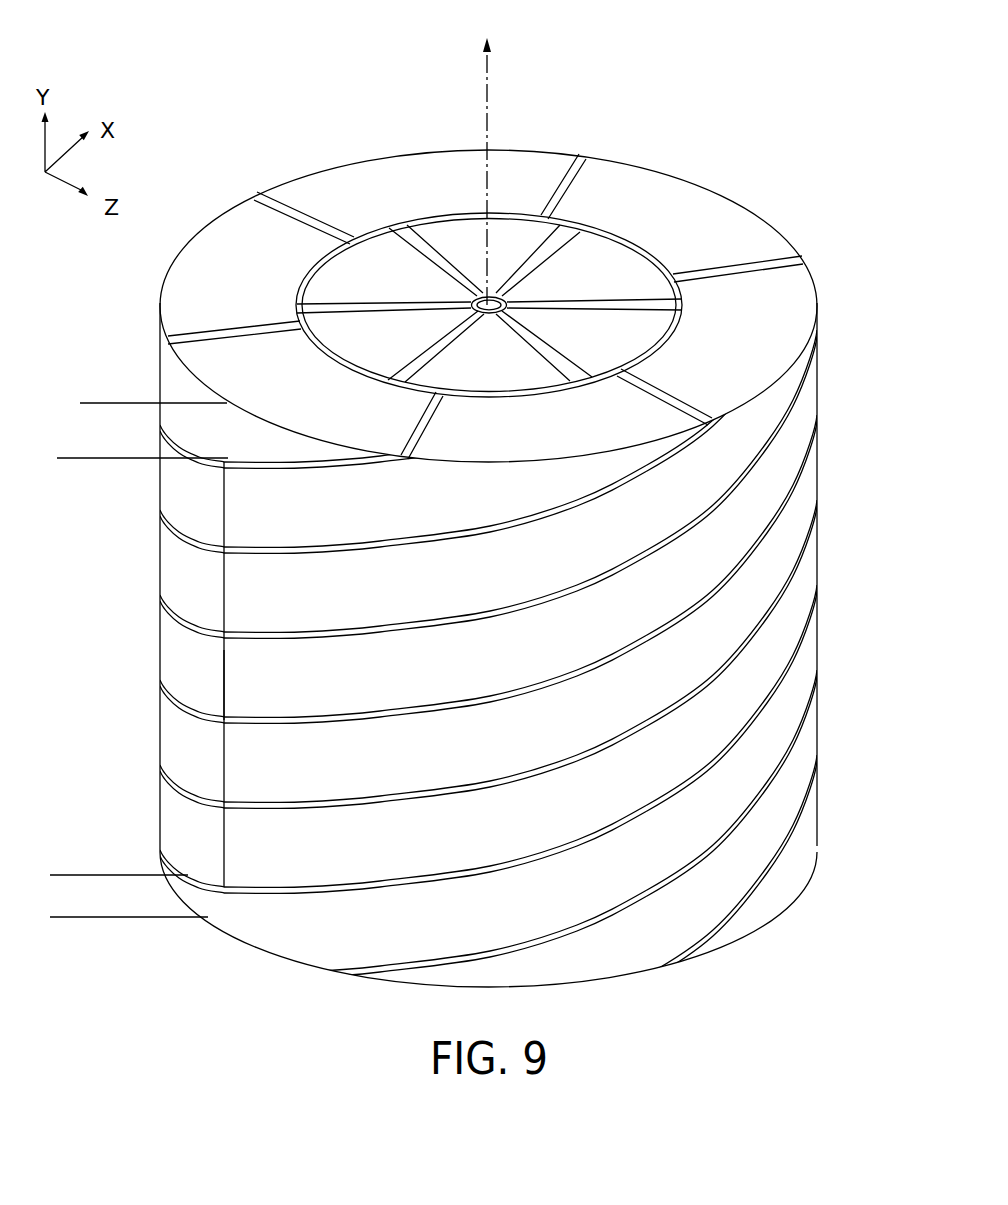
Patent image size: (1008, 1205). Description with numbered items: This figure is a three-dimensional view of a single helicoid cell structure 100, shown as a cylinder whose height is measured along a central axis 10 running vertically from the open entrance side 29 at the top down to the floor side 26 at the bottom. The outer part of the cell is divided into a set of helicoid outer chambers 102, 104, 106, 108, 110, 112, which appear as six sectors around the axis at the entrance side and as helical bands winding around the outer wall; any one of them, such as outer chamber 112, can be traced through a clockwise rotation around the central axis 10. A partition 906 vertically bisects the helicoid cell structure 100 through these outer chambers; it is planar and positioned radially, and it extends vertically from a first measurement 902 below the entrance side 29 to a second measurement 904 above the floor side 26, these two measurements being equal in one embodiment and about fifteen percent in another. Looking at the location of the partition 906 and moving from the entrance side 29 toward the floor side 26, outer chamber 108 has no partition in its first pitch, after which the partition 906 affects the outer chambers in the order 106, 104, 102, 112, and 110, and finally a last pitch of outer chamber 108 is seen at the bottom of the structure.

The helicoid cell structure 100 is at (229, 104).
The central axis 10 is at (488, 76).
The entrance side 29 is at (736, 204).
The floor side 26 is at (660, 964).
The outer chamber 102 is at (689, 231).
The outer chamber 104 is at (759, 347).
The outer chamber 106 is at (571, 432).
The outer chamber 108 is at (324, 402).
The outer chamber 110 is at (260, 282).
The outer chamber 112 is at (420, 201).
The first measurement 902 is at (88, 372).
The second measurement 904 is at (112, 845).
The partition 906 is at (214, 678).